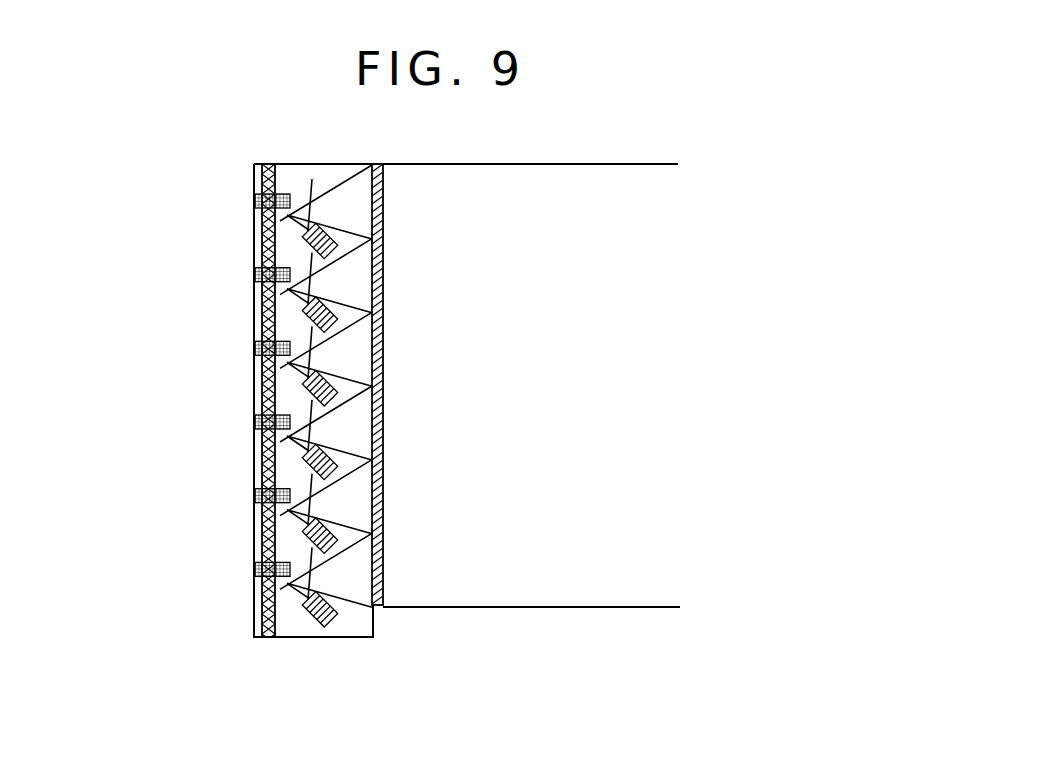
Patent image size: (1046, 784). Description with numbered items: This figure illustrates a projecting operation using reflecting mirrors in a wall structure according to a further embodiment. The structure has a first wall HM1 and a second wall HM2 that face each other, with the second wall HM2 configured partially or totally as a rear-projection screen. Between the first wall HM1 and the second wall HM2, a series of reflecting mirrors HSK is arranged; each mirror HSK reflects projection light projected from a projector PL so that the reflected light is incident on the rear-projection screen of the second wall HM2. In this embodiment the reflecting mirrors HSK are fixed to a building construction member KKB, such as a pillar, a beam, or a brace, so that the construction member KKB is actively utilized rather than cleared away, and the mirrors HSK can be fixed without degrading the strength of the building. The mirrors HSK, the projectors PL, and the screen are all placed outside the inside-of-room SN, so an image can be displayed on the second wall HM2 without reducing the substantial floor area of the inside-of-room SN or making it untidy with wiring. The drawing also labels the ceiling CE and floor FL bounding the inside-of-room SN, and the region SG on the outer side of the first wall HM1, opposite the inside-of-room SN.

The reflecting mirror HSK is at (310, 183).
The projector PL is at (305, 241).
The building construction member KKB is at (262, 307).
The first wall HM1 is at (257, 588).
The second wall HM2 is at (383, 500).
The outdoor side SG is at (148, 380).
The inside-of-room SN is at (559, 380).
The ceiling CE is at (639, 165).
The floor FL is at (610, 607).